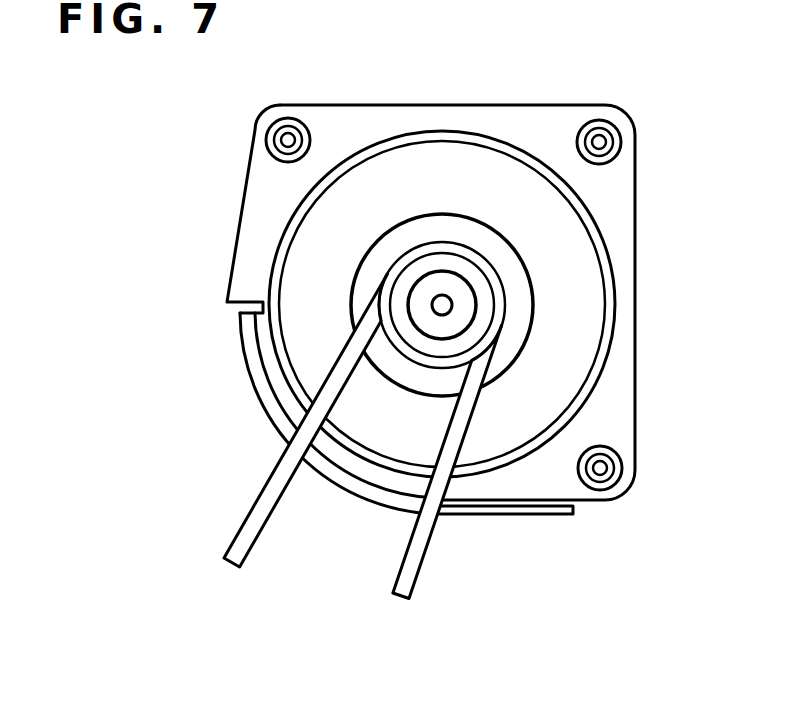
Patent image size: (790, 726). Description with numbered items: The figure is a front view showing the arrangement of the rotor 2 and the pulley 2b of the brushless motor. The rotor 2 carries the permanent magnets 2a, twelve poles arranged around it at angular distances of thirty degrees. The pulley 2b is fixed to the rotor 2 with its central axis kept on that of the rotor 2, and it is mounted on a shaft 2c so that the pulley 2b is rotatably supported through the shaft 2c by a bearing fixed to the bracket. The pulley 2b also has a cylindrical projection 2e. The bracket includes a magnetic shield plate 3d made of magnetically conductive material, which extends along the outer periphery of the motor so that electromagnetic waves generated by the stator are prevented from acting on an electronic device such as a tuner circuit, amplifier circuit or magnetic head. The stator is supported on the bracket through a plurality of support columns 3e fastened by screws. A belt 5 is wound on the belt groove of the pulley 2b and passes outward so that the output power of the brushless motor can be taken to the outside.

The rotor 2 is at (510, 143).
The permanent magnets 2a is at (600, 309).
The pulley 2b is at (483, 282).
The shaft 2c is at (442, 312).
The cylindrical projection 2e is at (440, 282).
The magnetic shield plate 3d is at (522, 515).
The support columns 3e is at (266, 141).
The belt 5 is at (402, 567).